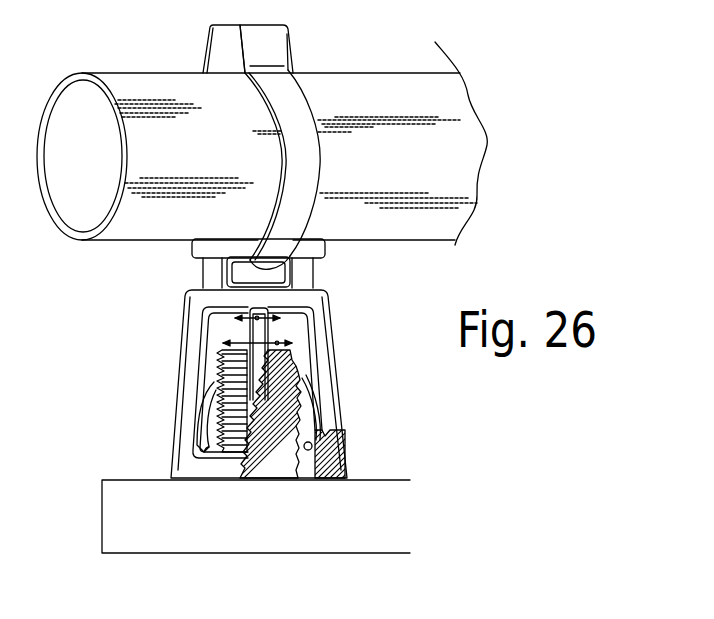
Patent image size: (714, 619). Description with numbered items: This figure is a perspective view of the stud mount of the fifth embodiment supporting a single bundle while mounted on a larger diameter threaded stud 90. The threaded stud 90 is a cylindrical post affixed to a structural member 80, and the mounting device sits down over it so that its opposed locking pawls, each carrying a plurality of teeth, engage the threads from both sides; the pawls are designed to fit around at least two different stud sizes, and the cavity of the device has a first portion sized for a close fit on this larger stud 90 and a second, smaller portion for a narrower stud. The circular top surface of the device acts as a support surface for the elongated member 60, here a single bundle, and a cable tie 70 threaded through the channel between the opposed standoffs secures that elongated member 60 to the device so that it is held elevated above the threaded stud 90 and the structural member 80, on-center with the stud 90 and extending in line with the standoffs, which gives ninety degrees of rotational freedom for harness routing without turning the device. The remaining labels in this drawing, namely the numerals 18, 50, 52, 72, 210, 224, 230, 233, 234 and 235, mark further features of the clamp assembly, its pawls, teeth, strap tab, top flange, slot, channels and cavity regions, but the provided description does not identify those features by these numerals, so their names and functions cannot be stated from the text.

The fastening clamp assembly 18 is at (138, 300).
The pawl 50 is at (222, 428).
The threaded screw 52 is at (220, 408).
The elongated member 60 is at (368, 97).
The cable tie 70 is at (283, 90).
The strap tab 72 is at (223, 48).
The structural member 80 is at (132, 492).
The threaded stud 90 is at (275, 462).
The top flange 210 is at (212, 273).
The strap slot 224 is at (325, 290).
The channel 230 is at (212, 372).
The channel inner wall 233 is at (226, 322).
The central rib 234 is at (262, 306).
The clearance gap 235 is at (283, 321).